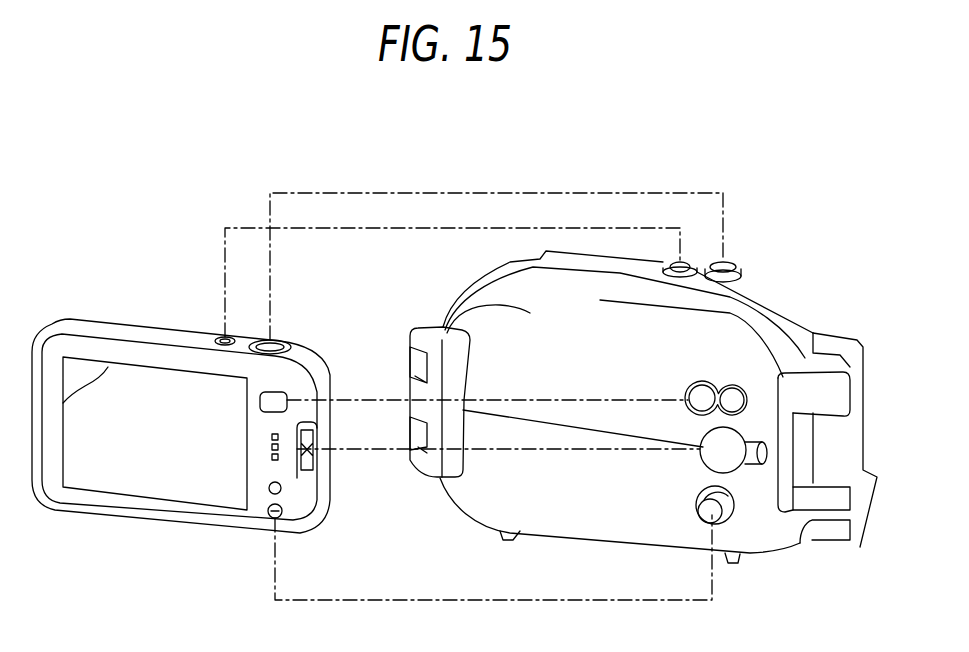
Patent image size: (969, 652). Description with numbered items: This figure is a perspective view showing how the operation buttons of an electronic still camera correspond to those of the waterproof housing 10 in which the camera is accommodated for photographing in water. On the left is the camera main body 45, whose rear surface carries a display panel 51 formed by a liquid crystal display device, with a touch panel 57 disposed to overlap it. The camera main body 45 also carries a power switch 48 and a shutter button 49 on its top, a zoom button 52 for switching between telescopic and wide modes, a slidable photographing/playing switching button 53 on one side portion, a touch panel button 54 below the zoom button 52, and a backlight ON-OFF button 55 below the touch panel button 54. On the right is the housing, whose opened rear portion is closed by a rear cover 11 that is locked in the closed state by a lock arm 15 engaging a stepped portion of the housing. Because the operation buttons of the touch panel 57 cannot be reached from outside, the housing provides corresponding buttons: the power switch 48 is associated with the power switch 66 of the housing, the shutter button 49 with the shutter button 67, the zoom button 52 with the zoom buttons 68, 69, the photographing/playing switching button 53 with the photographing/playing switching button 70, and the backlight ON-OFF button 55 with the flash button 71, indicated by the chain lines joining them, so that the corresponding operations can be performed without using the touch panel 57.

The waterproof housing 10 is at (448, 303).
The rear cover 11 is at (500, 513).
The lock arm 15 is at (857, 548).
The camera main body 45 is at (126, 321).
The power switch 48 is at (223, 337).
The shutter button 49 is at (285, 342).
The display panel 51 is at (117, 480).
The zoom button 52 is at (290, 385).
The photographing/playing switching button 53 is at (319, 470).
The touch panel button 54 is at (281, 494).
The backlight ON-OFF button 55 is at (270, 518).
The touch panel 57 is at (80, 373).
The power switch 66 is at (672, 262).
The shutter button 67 is at (738, 262).
The zoom button 68 is at (690, 382).
The zoom button 69 is at (768, 345).
The photographing/playing switching button 70 is at (700, 522).
The flash button 71 is at (736, 510).